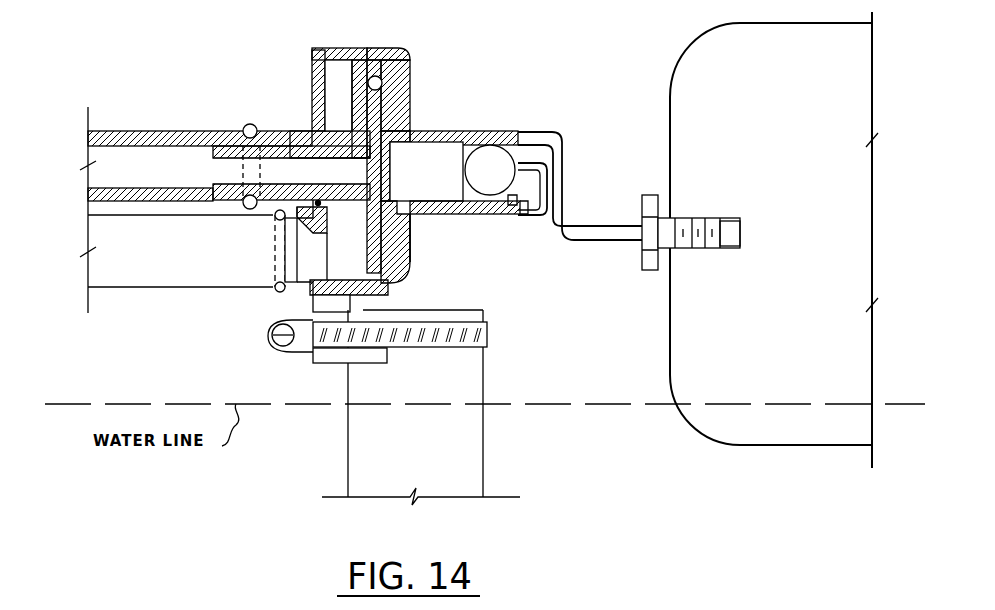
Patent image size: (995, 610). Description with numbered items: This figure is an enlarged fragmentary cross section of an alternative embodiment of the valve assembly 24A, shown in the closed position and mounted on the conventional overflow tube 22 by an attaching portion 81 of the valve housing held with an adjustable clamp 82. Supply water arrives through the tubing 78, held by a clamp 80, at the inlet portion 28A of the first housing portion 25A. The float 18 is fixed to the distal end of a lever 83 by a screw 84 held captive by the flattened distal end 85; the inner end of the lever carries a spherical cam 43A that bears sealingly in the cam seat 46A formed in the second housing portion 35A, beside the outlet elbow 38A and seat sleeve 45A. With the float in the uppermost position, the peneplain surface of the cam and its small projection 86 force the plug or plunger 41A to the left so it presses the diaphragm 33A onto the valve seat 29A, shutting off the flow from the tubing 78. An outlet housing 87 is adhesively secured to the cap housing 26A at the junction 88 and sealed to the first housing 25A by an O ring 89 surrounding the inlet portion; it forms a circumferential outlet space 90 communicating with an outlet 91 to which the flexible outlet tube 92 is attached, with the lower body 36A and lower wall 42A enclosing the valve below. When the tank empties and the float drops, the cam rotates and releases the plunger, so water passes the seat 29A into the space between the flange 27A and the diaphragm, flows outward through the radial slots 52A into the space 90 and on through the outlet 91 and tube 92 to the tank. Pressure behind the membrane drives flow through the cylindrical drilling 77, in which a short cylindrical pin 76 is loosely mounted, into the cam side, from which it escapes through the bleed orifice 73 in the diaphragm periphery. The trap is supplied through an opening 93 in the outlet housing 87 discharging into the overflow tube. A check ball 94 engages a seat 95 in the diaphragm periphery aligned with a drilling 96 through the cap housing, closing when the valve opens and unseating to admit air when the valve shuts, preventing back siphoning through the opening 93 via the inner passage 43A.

The float 18 is at (672, 380).
The overflow tube 22 is at (488, 433).
The flush valve assembly 24A is at (454, 108).
The first housing portion 25A is at (294, 130).
The cap housing 26A is at (437, 218).
The flange 27A is at (338, 95).
The inlet portion 28A is at (237, 208).
The valve seat 29A is at (291, 173).
The diaphragm 33A is at (390, 176).
The second portion of the housing 35A is at (479, 131).
The valve body lower portion 36A is at (414, 266).
The outlet elbow 38A is at (562, 162).
The plug or plunger 41A is at (490, 170).
The lower wall 42A is at (467, 214).
The spherical cam 43A is at (534, 177).
The seat sleeve 45A is at (553, 212).
The cam seat 46A is at (504, 215).
The radial slots 52A is at (356, 272).
The bleed orifice 73 is at (398, 293).
The cylindrical pin 76 is at (388, 171).
The cylindrical drilling 77 is at (291, 171).
The tubing 78 is at (172, 130).
The clamp 80 is at (250, 124).
The attaching portion 81 is at (323, 365).
The adjustable clamp 82 is at (489, 332).
The lever 83 is at (606, 233).
The screw 84 is at (651, 270).
The flattened distal end 85 is at (740, 232).
The projection 86 is at (470, 168).
The outlet housing 87 is at (318, 48).
The junction 88 is at (386, 48).
The O ring 89 is at (313, 222).
The circumferential outlet space 90 is at (335, 58).
The outlet 91 is at (300, 290).
The outlet conduit or tube 92 is at (156, 287).
The opening 93 is at (349, 308).
The check ball 94 is at (358, 101).
The seat 95 is at (410, 59).
The drilling 96 is at (382, 85).